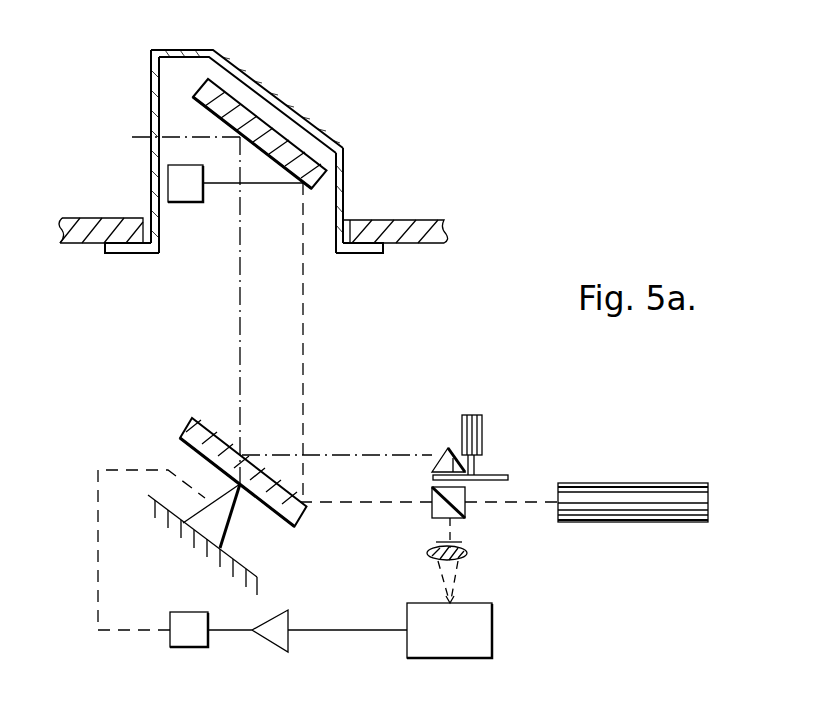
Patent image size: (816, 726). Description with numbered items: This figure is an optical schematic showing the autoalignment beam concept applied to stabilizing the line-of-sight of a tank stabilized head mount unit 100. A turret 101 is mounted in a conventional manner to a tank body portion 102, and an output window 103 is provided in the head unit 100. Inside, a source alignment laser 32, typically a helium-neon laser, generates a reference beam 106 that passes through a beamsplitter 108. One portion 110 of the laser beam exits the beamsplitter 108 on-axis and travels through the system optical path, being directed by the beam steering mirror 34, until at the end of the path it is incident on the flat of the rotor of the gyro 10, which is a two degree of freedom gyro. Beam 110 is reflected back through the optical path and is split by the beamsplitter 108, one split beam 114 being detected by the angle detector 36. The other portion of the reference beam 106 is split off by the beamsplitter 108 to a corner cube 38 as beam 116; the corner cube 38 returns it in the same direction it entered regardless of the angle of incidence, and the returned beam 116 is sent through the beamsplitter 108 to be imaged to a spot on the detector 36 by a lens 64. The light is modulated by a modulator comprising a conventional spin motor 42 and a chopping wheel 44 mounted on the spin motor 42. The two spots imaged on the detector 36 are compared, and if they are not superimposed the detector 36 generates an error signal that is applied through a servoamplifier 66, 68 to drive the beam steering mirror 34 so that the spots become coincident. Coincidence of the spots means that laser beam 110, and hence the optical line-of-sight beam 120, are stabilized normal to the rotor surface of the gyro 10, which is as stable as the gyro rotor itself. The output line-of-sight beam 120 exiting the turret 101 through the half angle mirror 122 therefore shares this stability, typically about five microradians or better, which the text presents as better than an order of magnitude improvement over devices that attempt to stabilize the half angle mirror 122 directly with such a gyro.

The stabilized head mount unit 100 is at (377, 80).
The turret 101 is at (184, 50).
The tank body portion 102 is at (445, 220).
The output window 103 is at (151, 86).
The gyro 10 is at (200, 202).
The output line-of-sight beam 120 is at (134, 137).
The half angle mirror 122 is at (252, 112).
The laser beam portion 110 is at (303, 362).
The beam steering mirror 34 is at (190, 418).
The corner cube 38 is at (442, 452).
The spin motor 42 is at (473, 415).
The chopping wheel 44 is at (507, 476).
The reference beam 106 is at (519, 489).
The beamsplitter 108 is at (465, 515).
The split beam 114 is at (438, 542).
The corner cube beam 116 is at (460, 543).
The lens 64 is at (430, 566).
The detector 36 is at (492, 658).
The servoamplifier 66 is at (288, 652).
The servoamplifier 68 is at (208, 647).
The alignment laser 32 is at (708, 522).